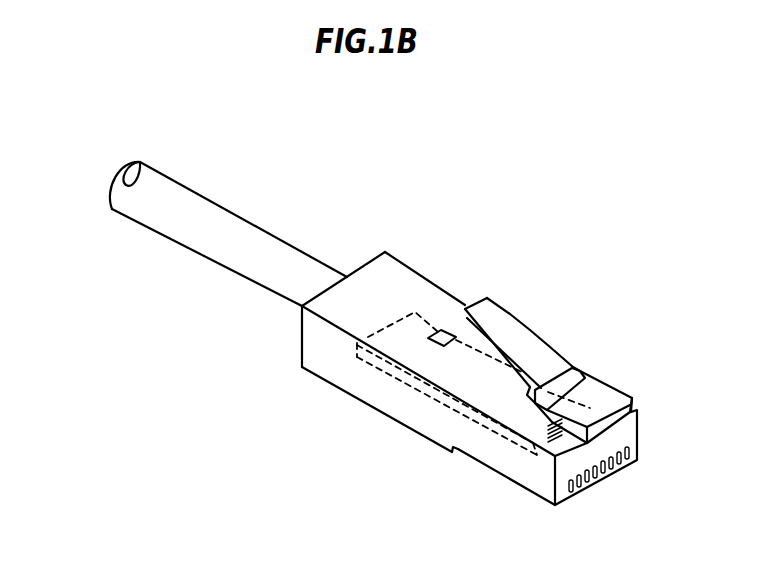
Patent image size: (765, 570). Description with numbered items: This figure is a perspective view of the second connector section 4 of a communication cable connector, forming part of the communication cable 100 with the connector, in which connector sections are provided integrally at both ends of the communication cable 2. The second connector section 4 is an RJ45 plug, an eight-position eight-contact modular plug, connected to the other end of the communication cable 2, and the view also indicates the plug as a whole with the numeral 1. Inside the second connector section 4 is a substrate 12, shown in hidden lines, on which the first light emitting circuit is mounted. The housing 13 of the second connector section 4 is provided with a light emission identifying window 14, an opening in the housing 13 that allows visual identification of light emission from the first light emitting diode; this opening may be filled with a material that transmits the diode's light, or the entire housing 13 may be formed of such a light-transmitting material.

The communication cable with the connector 100 is at (312, 193).
The modular plug 1 is at (617, 293).
The communication cable 2 is at (197, 197).
The second connector section 4 is at (385, 252).
The substrate 12 is at (436, 400).
The housing 13 is at (327, 372).
The light emission identifying window 14 is at (443, 330).